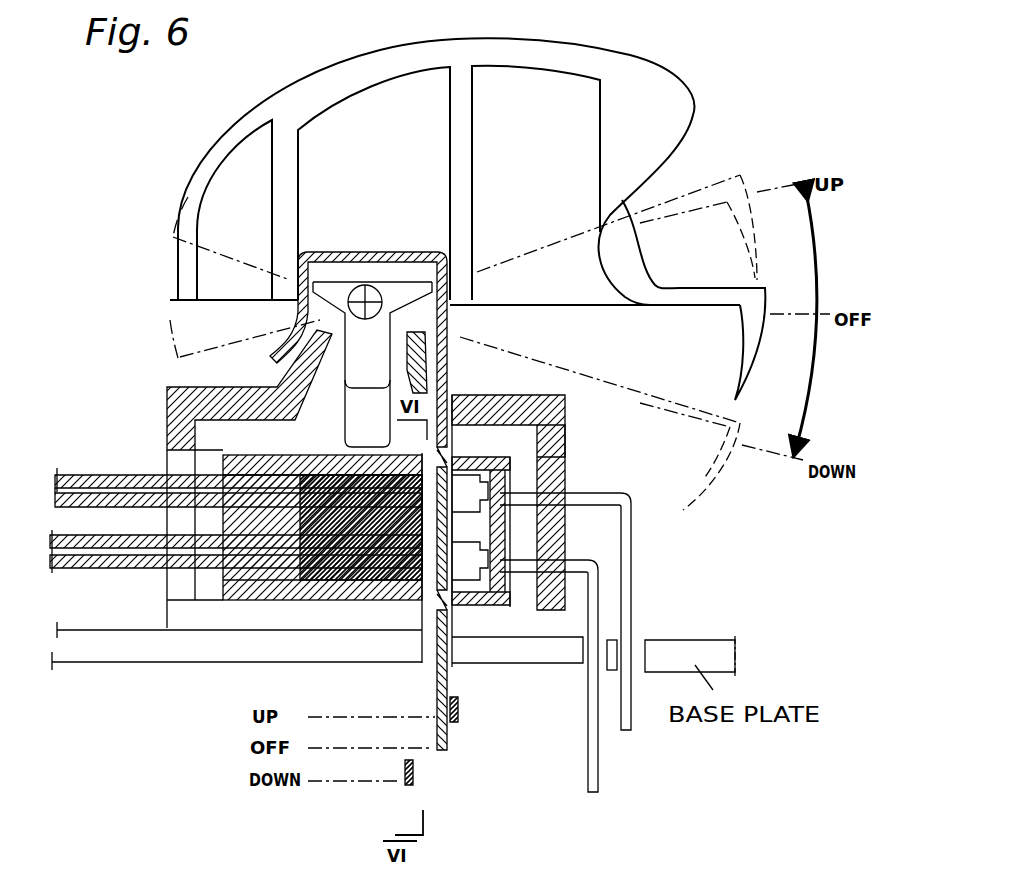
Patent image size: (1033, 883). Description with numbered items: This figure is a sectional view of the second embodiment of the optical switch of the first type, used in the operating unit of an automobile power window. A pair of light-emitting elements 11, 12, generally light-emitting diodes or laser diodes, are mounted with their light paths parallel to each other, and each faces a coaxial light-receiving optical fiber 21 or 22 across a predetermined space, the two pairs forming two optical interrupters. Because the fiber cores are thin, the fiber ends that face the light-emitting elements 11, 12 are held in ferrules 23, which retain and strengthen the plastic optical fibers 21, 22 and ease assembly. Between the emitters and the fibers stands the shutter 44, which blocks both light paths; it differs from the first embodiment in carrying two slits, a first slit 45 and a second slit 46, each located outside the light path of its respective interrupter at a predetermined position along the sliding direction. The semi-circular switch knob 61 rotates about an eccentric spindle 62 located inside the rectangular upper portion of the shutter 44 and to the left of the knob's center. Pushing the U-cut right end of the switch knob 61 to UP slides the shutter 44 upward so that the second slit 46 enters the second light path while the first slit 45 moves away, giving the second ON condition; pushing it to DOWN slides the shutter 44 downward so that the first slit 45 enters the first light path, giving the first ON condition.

The switch knob 61 is at (626, 53).
The eccentric spindle 62 is at (378, 287).
The ferrule 23 is at (372, 455).
The optical fiber 21 is at (93, 490).
The optical fiber 22 is at (83, 540).
The light-emitting element 11 is at (485, 497).
The light-emitting element 12 is at (483, 553).
The shutter 44 is at (448, 740).
The first slit 45 is at (442, 452).
The second slit 46 is at (453, 612).